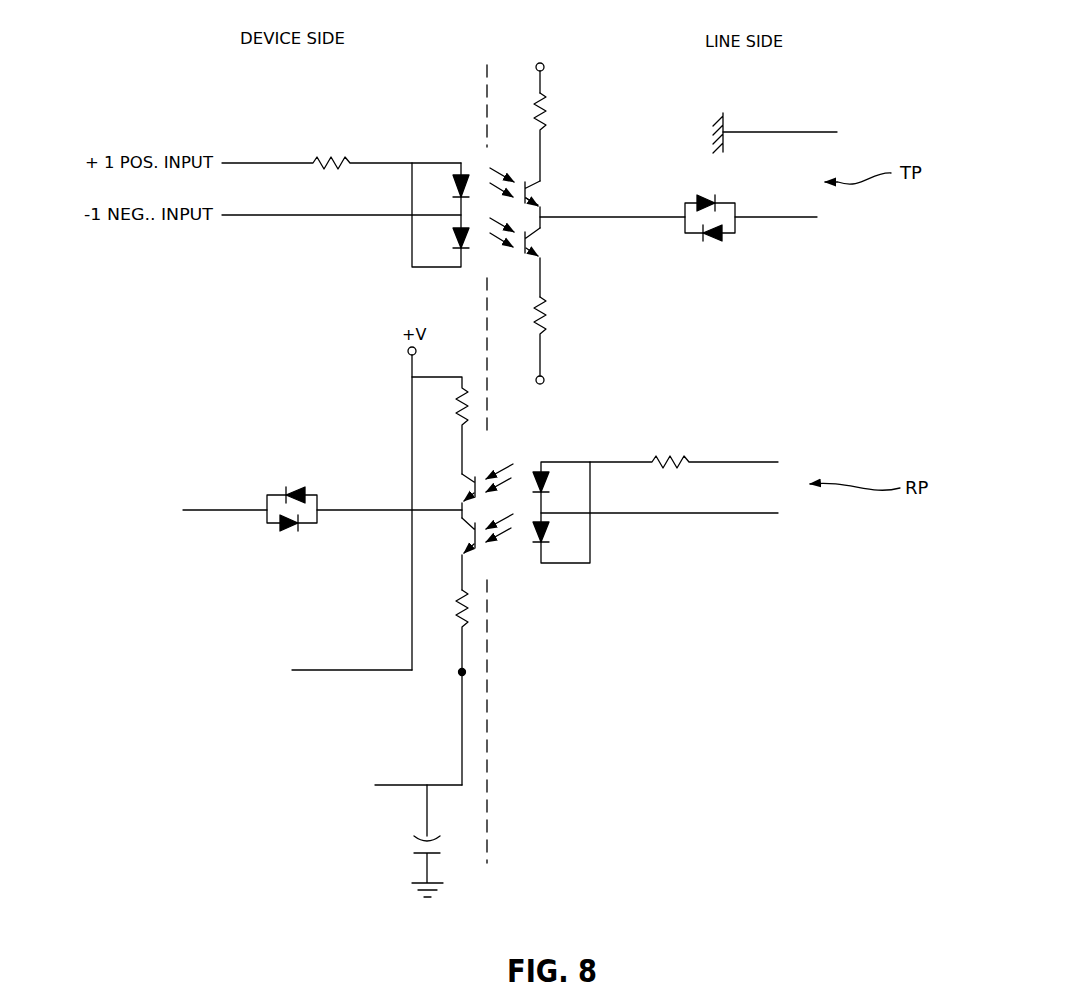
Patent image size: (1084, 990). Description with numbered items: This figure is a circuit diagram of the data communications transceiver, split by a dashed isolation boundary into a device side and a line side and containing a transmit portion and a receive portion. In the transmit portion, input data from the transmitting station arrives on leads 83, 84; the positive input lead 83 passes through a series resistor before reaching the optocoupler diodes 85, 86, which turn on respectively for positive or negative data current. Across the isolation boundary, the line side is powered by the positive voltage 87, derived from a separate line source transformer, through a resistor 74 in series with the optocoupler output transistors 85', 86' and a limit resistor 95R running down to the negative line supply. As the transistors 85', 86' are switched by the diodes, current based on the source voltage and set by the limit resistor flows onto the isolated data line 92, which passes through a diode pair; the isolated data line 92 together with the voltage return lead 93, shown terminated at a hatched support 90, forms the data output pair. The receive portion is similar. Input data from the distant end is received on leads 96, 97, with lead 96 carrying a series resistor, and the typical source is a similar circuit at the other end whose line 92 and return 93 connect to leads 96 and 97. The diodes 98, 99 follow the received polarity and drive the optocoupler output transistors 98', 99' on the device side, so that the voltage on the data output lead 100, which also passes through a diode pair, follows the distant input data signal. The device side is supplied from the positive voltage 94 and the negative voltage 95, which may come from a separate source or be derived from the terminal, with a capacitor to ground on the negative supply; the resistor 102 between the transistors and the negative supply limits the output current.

The input data lead 83 is at (252, 163).
The input data lead 84 is at (252, 215).
The optocoupler diode 85 is at (433, 151).
The optocoupler diode 86 is at (409, 245).
The positive voltage source 87 is at (545, 72).
The resistor 74 is at (545, 118).
The optocoupler output transistor 85' is at (565, 193).
The optocoupler output transistor 86' is at (566, 261).
The limit resistor 95R is at (545, 320).
The isolated data line 92 is at (800, 217).
The hatched support / ground 90 is at (758, 123).
The voltage return lead 93 is at (807, 132).
The optocoupler output transistor 98' is at (420, 493).
The optocoupler output transistor 99' is at (420, 554).
The data output lead 100 is at (213, 510).
The resistor 102 is at (470, 622).
The positive voltage source 94 is at (342, 670).
The negative voltage source 95 is at (400, 785).
The input data lead 96 is at (752, 462).
The input data lead 97 is at (730, 513).
The diode 98 is at (579, 490).
The diode 99 is at (569, 563).